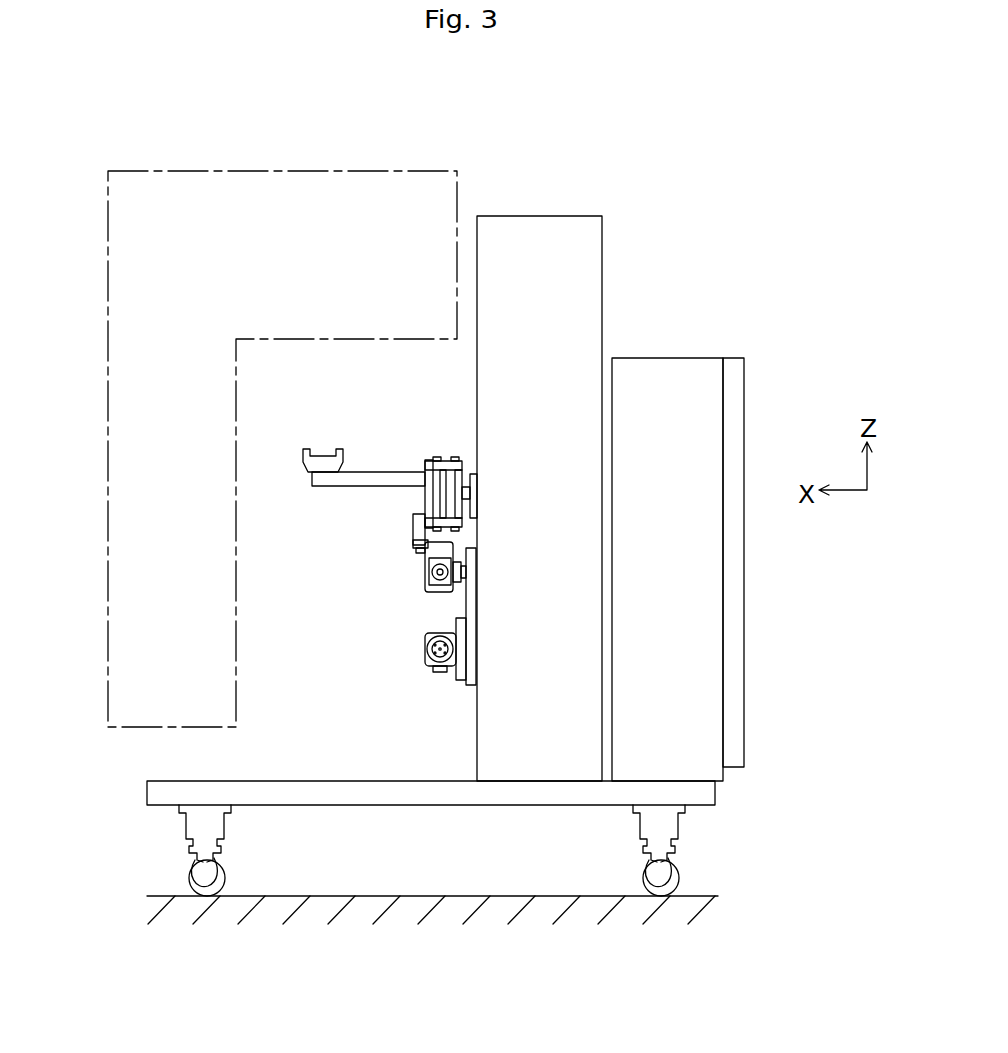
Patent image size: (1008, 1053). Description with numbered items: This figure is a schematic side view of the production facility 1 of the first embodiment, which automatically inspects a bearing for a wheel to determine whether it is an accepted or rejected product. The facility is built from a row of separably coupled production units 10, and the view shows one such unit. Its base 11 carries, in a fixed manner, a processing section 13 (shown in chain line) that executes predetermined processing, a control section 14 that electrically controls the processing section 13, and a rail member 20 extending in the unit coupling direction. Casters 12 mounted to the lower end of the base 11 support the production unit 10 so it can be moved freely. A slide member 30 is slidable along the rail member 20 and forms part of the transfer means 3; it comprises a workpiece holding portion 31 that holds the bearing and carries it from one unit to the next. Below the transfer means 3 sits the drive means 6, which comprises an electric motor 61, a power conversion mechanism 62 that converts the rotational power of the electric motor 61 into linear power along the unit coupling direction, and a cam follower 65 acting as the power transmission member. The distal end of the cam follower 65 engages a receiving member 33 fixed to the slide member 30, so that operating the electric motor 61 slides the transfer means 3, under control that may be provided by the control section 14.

The production facility 1 is at (732, 212).
The production unit 10 is at (640, 301).
The base 11 is at (416, 802).
The casters 12 is at (190, 824).
The processing section 13 is at (138, 477).
The control section 14 is at (697, 592).
The rail member 20 is at (449, 461).
The transfer means 3 is at (346, 422).
The slide member 30 is at (417, 444).
The workpiece holding portion 31 is at (310, 462).
The receiving member 33 is at (413, 522).
The drive means 6 is at (348, 535).
The electric motor 61 is at (426, 647).
The power conversion mechanism 62 is at (418, 591).
The cam follower 65 is at (413, 541).